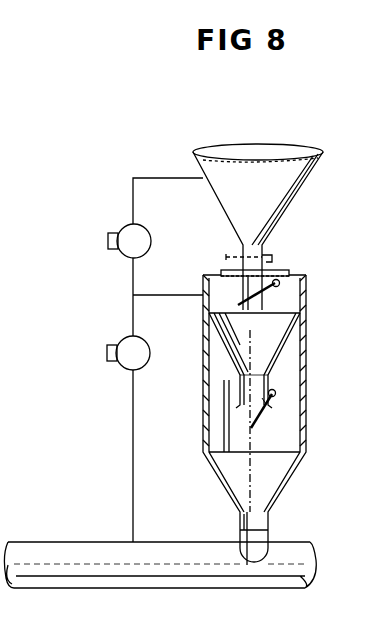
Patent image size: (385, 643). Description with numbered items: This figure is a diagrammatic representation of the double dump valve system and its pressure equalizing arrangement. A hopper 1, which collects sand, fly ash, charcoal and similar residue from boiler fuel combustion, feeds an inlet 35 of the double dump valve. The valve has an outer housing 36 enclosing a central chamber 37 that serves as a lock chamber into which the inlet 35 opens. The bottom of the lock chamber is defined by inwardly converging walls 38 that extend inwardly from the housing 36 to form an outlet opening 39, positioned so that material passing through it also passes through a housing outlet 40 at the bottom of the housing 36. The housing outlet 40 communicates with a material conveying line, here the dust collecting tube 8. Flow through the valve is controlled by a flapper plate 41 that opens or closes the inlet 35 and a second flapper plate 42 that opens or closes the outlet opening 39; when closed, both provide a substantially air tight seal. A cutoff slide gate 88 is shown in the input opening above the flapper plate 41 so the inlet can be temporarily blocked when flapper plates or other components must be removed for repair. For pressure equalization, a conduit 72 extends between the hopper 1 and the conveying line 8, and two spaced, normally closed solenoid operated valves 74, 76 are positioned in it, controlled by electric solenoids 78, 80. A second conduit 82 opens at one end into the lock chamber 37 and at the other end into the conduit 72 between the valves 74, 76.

The hopper 1 is at (285, 158).
The dust collecting tube 8 is at (180, 575).
The inlet 35 is at (272, 272).
The outer housing 36 is at (306, 435).
The central chamber 37 is at (275, 345).
The inwardly converging walls 38 is at (280, 378).
The outlet opening 39 is at (268, 395).
The housing outlet 40 is at (252, 548).
The flapper plate 41 is at (282, 285).
The second flapper plate 42 is at (255, 430).
The conduit 72 is at (133, 178).
The valve 74 is at (151, 243).
The valve 76 is at (145, 365).
The electric solenoid 78 is at (108, 242).
The electric solenoid 80 is at (108, 358).
The second conduit 82 is at (175, 295).
The cutoff slide gate 88 is at (272, 256).